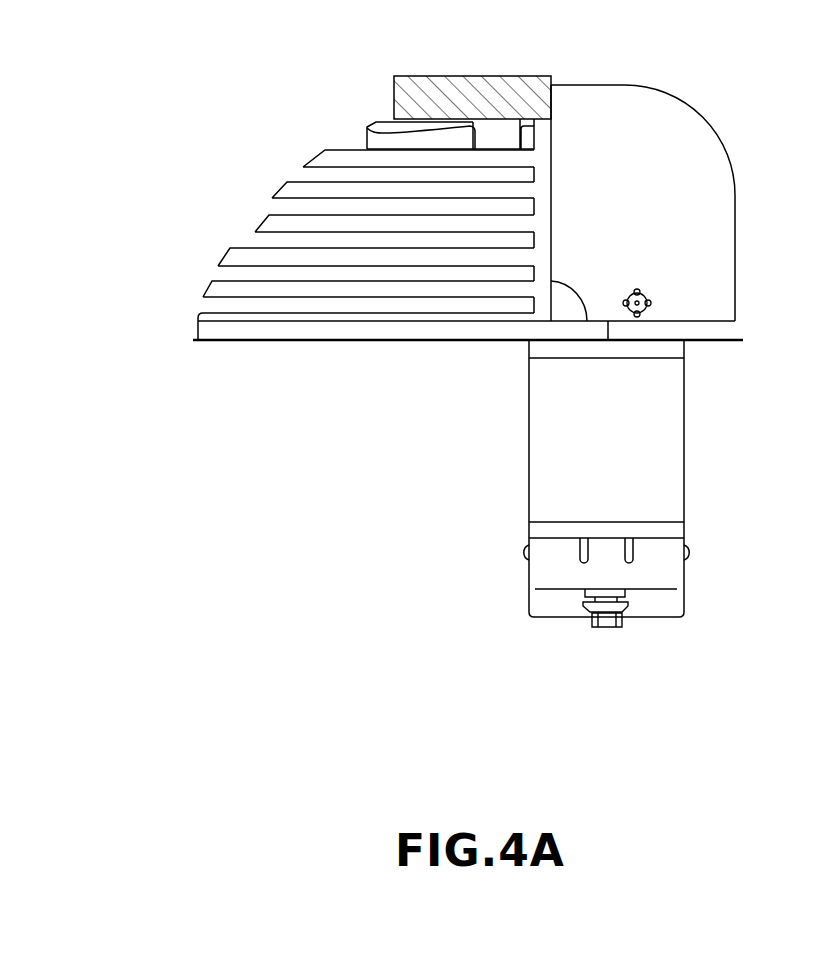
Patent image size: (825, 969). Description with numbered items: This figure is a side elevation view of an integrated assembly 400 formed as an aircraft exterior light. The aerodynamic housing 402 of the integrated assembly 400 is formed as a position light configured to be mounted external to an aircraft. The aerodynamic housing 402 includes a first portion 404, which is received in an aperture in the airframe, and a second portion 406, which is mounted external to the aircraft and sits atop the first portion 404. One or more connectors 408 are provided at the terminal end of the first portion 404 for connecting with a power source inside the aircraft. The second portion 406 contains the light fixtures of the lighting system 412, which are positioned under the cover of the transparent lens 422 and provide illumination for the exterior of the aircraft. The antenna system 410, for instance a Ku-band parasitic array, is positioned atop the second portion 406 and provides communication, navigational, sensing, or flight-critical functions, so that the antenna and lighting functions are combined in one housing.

The integrated assembly 400 is at (204, 86).
The aerodynamic housing 402 is at (503, 369).
The first portion 404 is at (689, 484).
The second portion 406 is at (728, 345).
The connector 408 is at (607, 622).
The antenna system 410 is at (437, 71).
The lighting system 412 is at (585, 274).
The transparent lens 422 is at (685, 135).